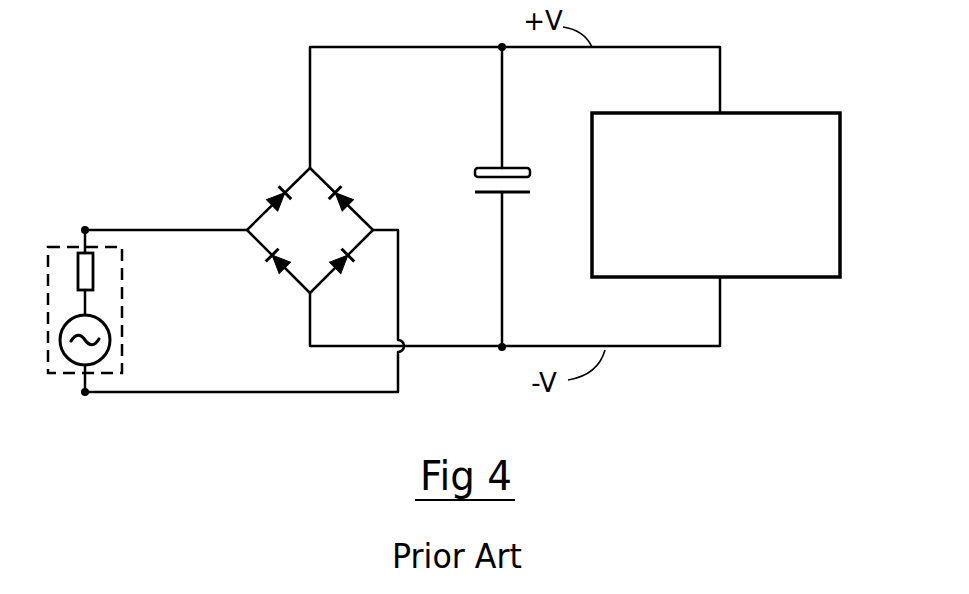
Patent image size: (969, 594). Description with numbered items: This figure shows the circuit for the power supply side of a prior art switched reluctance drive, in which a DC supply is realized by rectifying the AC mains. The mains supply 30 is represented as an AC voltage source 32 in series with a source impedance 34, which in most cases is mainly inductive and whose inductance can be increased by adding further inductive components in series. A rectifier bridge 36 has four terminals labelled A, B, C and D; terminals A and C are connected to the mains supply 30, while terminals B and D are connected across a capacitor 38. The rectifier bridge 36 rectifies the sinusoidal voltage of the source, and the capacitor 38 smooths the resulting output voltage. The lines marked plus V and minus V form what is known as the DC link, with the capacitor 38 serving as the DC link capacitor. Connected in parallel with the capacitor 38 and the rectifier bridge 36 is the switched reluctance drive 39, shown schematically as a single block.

The mains supply 30 is at (49, 374).
The AC voltage source 32 is at (110, 350).
The source impedance 34 is at (77, 270).
The rectifier bridge 36 is at (278, 228).
The capacitor 38 is at (483, 167).
The switched reluctance drive 39 is at (797, 112).